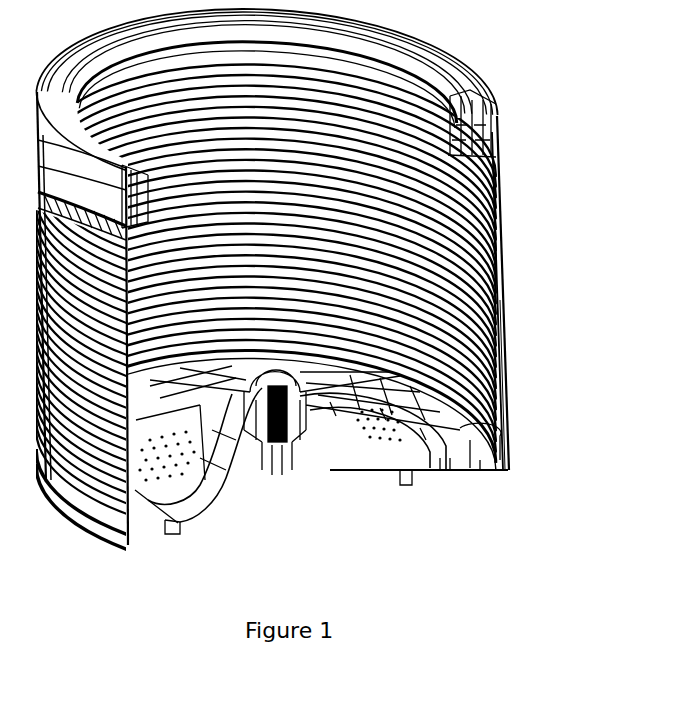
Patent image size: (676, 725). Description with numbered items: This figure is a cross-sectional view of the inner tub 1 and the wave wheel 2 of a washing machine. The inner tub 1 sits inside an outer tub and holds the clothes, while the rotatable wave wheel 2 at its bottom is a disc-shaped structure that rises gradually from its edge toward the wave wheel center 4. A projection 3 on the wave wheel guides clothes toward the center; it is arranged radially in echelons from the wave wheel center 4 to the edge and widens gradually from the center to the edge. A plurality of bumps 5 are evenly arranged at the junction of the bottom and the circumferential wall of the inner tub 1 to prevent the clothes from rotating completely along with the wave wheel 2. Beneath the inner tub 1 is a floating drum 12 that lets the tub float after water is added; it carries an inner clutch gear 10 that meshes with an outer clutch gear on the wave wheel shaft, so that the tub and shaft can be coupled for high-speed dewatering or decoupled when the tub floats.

The inner tub 1 is at (498, 207).
The wave wheel 2 is at (420, 440).
The projection 3 is at (502, 336).
The wave wheel center 4 is at (345, 368).
The bumps 5 is at (478, 438).
The inner clutch gear 10 is at (318, 460).
The floating drum 12 is at (228, 497).